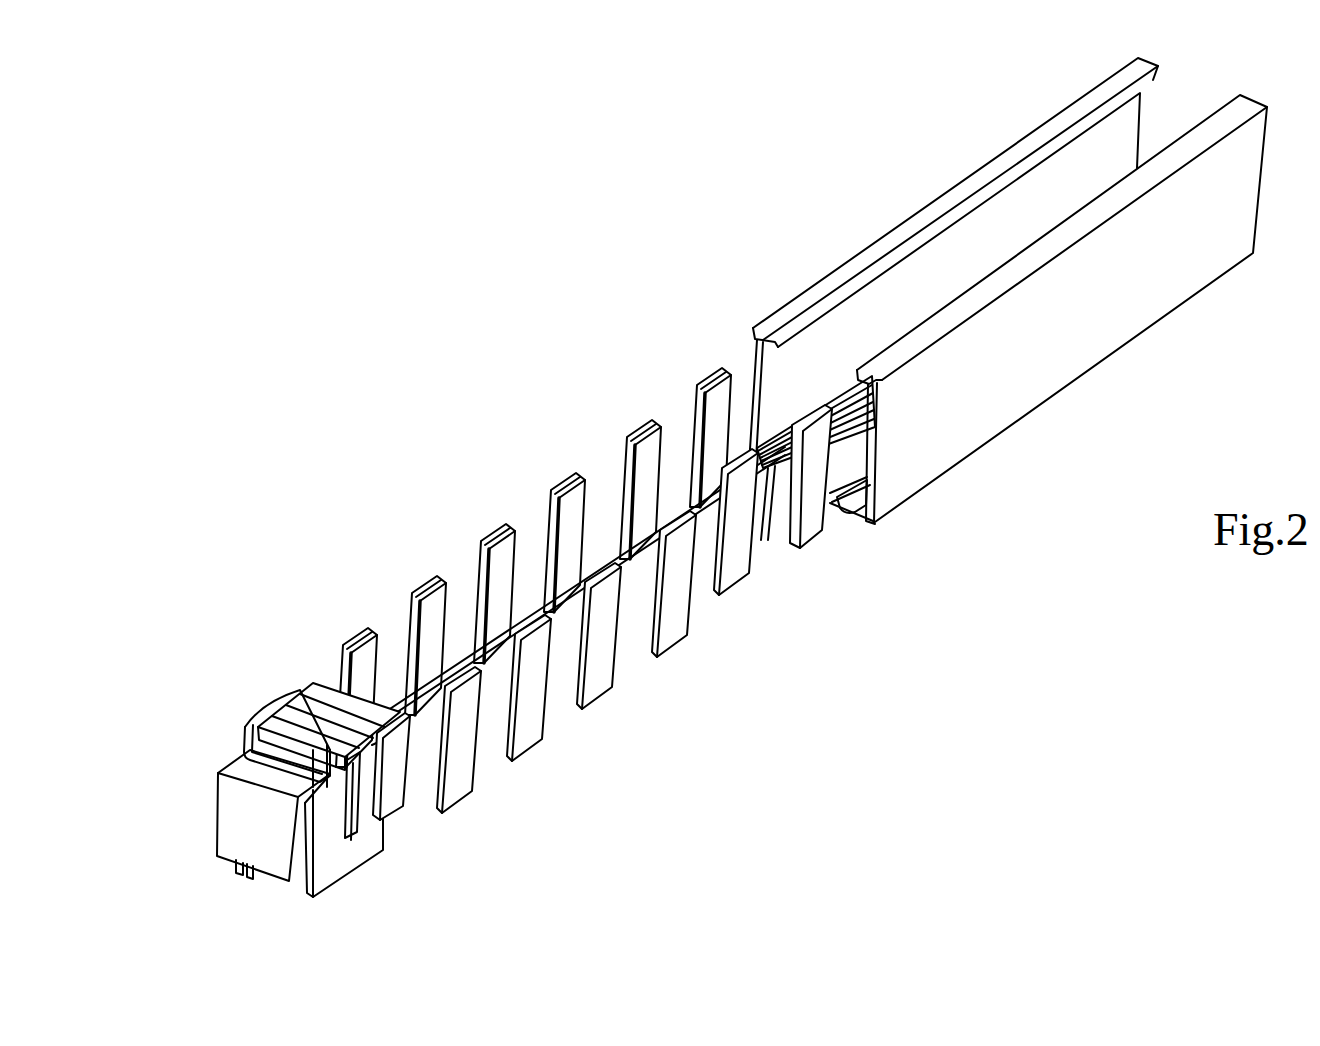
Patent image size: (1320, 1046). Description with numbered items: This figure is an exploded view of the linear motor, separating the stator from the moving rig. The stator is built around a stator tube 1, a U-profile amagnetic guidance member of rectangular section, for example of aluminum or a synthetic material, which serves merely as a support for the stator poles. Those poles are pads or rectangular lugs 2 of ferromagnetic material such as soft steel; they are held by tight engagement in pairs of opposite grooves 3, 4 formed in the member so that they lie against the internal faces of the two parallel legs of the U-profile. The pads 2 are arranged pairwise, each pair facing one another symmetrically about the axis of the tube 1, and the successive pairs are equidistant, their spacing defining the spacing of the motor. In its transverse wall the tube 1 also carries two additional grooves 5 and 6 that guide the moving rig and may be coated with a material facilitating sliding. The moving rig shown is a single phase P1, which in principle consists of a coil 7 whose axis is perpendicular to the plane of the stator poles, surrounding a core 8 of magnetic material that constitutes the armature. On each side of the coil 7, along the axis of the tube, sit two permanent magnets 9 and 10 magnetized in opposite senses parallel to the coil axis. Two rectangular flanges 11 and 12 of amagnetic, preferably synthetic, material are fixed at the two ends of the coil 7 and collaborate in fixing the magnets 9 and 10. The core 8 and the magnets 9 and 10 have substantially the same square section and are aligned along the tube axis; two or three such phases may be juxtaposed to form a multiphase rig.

The stator tube 1 is at (947, 428).
The rectangular lugs 2 is at (822, 433).
The groove 3 is at (755, 333).
The groove 4 is at (873, 522).
The additional groove 5 is at (773, 478).
The additional groove 6 is at (843, 500).
The coil 7 is at (309, 713).
The core 8 is at (352, 815).
The permanent magnet 9 is at (393, 773).
The permanent magnet 10 is at (238, 820).
The rectangular flange 11 is at (250, 735).
The rectangular flange 12 is at (345, 857).
The phase P1 is at (256, 690).